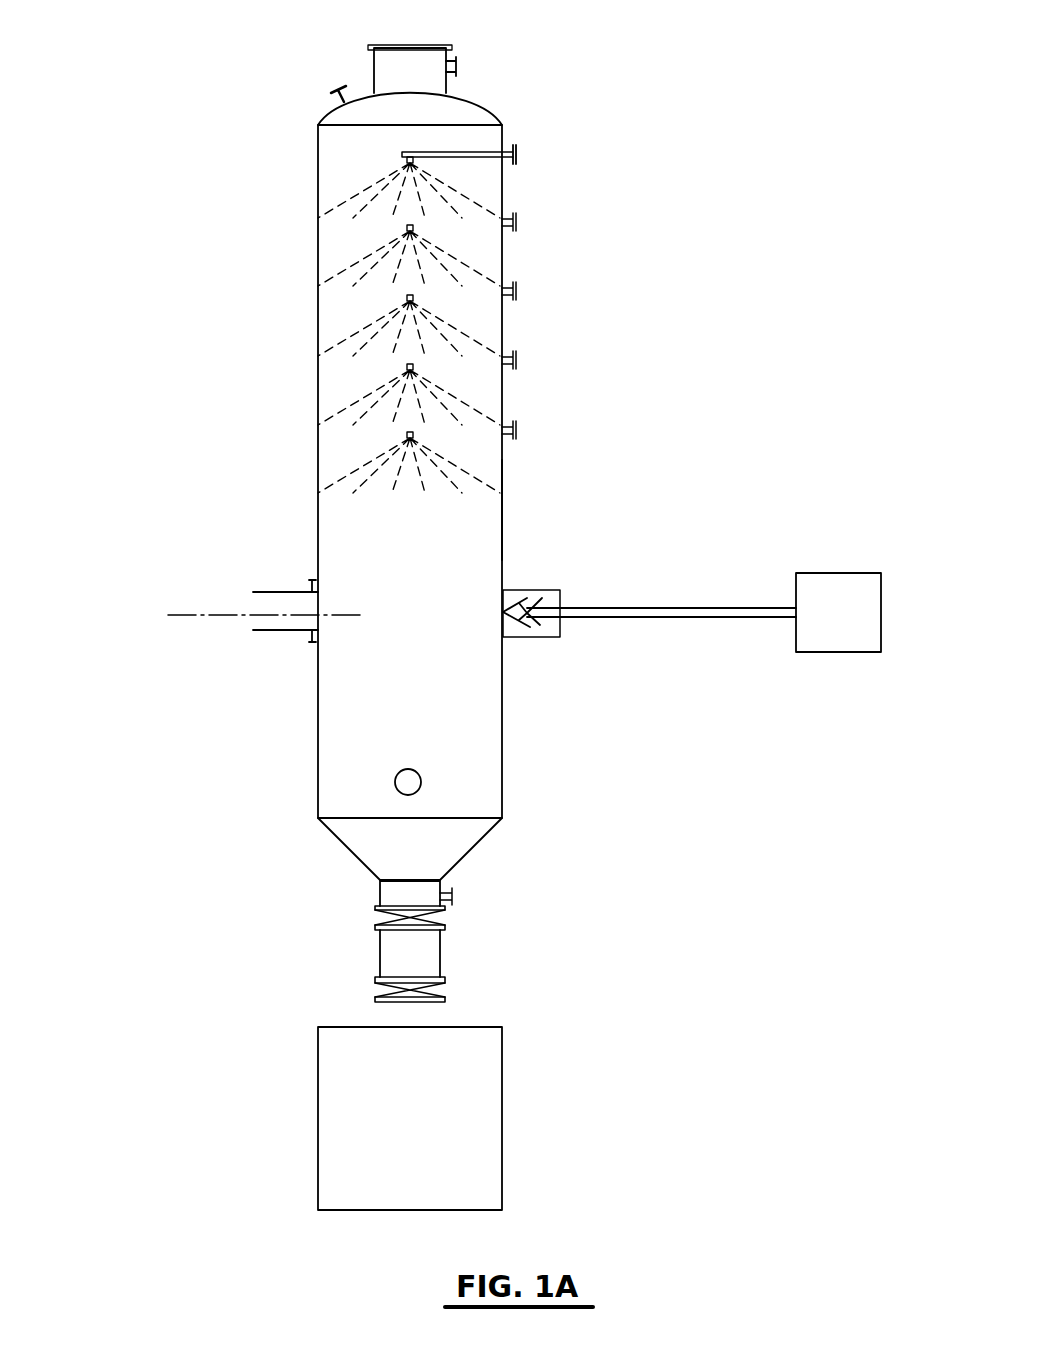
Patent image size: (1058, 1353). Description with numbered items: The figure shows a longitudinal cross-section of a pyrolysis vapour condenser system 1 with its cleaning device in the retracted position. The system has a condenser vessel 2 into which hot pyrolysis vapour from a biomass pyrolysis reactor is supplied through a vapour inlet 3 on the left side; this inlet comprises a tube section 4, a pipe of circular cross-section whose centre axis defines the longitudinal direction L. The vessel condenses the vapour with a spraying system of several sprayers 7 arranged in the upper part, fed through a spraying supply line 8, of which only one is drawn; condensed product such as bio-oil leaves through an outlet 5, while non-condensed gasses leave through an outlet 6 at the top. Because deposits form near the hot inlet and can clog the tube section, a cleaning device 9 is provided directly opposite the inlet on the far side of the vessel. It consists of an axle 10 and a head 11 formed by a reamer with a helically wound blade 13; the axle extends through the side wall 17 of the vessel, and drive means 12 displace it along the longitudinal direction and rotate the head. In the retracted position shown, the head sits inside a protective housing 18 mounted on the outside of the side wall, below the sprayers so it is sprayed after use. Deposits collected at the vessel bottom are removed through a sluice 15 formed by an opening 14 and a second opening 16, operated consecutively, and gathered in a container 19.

The pyrolysis vapour condenser system 1 is at (198, 93).
The condenser vessel 2 is at (317, 303).
The vapour inlet 3 is at (165, 580).
The tube section 4 is at (260, 597).
The outlet 5 is at (405, 769).
The outlet 6 is at (458, 65).
The sprayers 7 is at (404, 158).
The spraying supply line 8 is at (462, 157).
The cleaning device 9 is at (658, 608).
The axle 10 is at (692, 617).
The head 11 is at (530, 602).
The drive means 12 is at (838, 640).
The blade 13 is at (525, 618).
The opening 14 is at (393, 902).
The sluice 15 is at (480, 943).
The second opening 16 is at (427, 973).
The side wall 17 is at (502, 510).
The protective housing 18 is at (560, 628).
The container 19 is at (485, 1097).
The longitudinal direction L is at (192, 617).